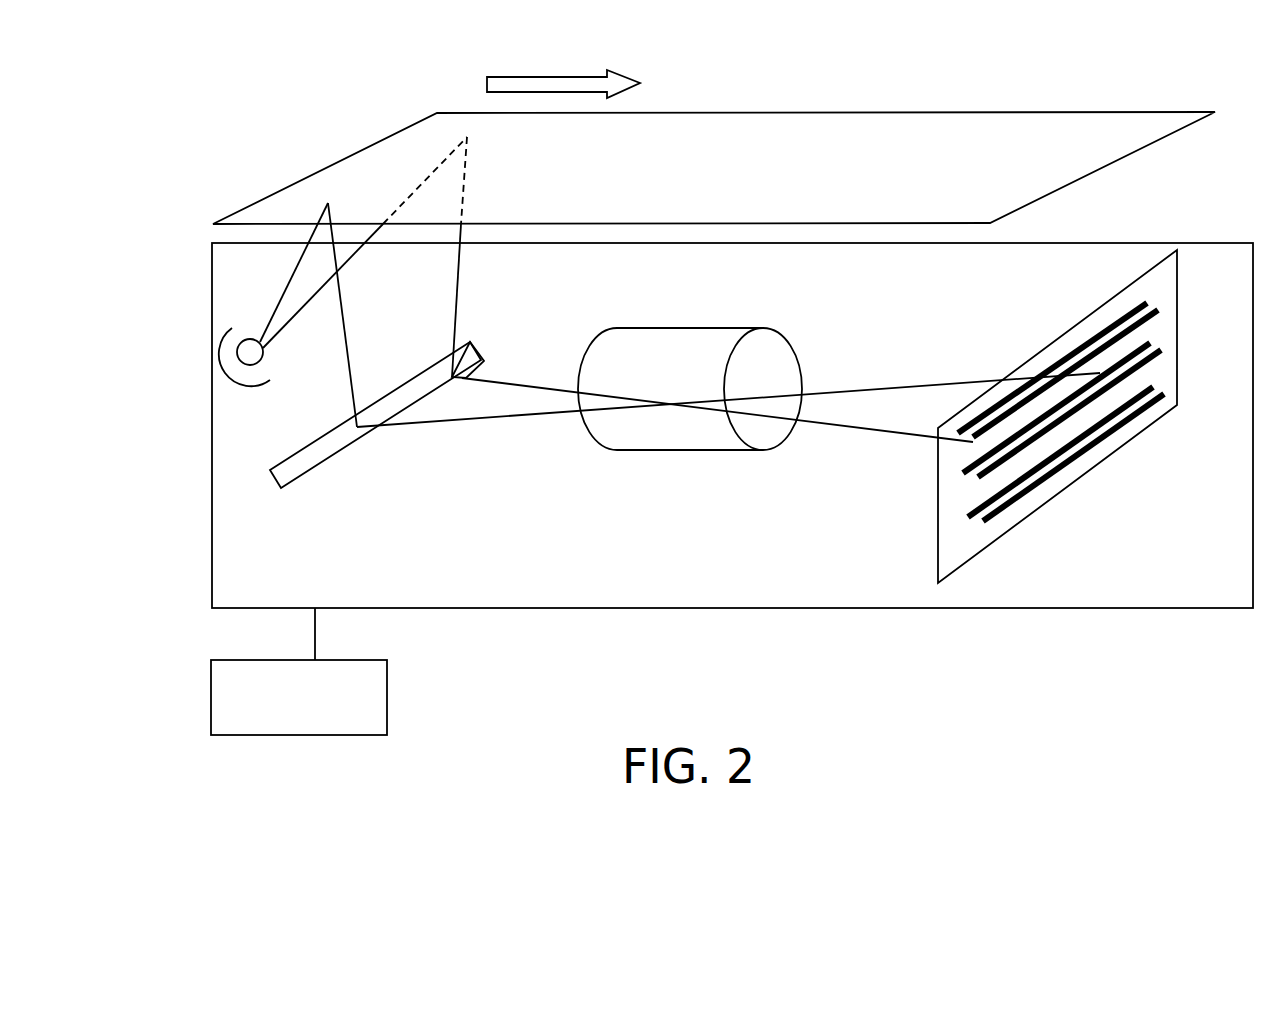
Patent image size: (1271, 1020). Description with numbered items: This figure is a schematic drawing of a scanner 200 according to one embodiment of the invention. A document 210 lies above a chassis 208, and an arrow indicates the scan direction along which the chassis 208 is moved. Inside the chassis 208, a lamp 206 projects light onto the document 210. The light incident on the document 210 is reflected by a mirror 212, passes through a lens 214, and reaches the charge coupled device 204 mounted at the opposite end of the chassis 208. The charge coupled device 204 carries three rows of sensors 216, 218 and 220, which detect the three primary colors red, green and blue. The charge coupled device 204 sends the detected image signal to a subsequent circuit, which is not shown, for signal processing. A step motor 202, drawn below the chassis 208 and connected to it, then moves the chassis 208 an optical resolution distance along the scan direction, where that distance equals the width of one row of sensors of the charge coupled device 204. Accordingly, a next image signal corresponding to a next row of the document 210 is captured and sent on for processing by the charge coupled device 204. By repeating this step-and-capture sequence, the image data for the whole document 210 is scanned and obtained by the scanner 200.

The scanner 200 is at (1002, 673).
The step motor 202 is at (387, 693).
The charge coupled device 204 is at (937, 496).
The lamp 206 is at (223, 373).
The chassis 208 is at (1222, 608).
The document 210 is at (325, 168).
The mirror 212 is at (282, 492).
The lens 214 is at (688, 452).
The sensor 216 is at (1137, 295).
The sensor 218 is at (1141, 337).
The sensor 220 is at (1143, 378).